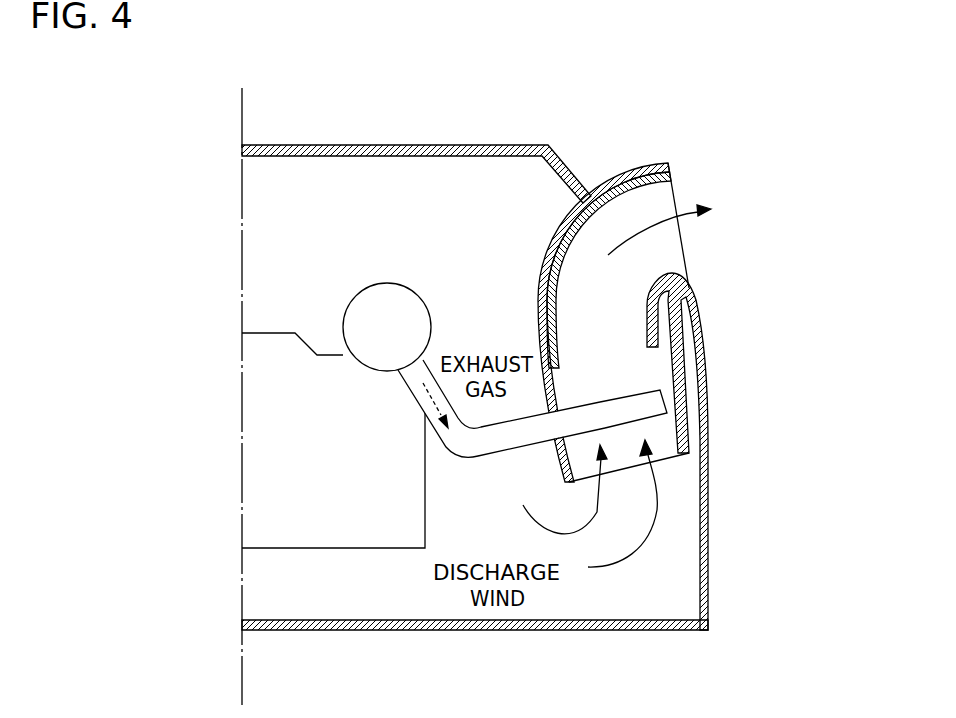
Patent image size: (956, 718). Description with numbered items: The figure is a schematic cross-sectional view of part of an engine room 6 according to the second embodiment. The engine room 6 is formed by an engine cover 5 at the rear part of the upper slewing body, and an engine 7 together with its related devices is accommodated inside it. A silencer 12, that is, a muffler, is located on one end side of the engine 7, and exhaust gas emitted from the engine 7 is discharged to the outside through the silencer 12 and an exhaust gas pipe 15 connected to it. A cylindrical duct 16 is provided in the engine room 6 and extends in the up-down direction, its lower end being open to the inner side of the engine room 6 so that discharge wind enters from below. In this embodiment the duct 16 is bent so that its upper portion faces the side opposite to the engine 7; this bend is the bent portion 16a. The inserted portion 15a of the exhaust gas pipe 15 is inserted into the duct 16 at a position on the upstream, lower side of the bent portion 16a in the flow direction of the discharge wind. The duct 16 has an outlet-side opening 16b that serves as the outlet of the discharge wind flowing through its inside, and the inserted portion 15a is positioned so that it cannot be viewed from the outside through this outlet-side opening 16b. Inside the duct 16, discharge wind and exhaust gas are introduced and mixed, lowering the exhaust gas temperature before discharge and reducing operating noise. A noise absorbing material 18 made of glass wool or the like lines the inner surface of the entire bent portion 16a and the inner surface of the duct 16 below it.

The engine cover 5 is at (399, 145).
The engine room 6 is at (373, 602).
The engine 7 is at (270, 333).
The silencer 12 is at (415, 283).
The exhaust gas pipe 15 is at (473, 460).
The inserted portion 15a is at (605, 402).
The duct 16 is at (678, 352).
The bent portion 16a is at (567, 218).
The outlet-side opening 16b is at (683, 240).
The noise absorbing material 18 is at (537, 290).